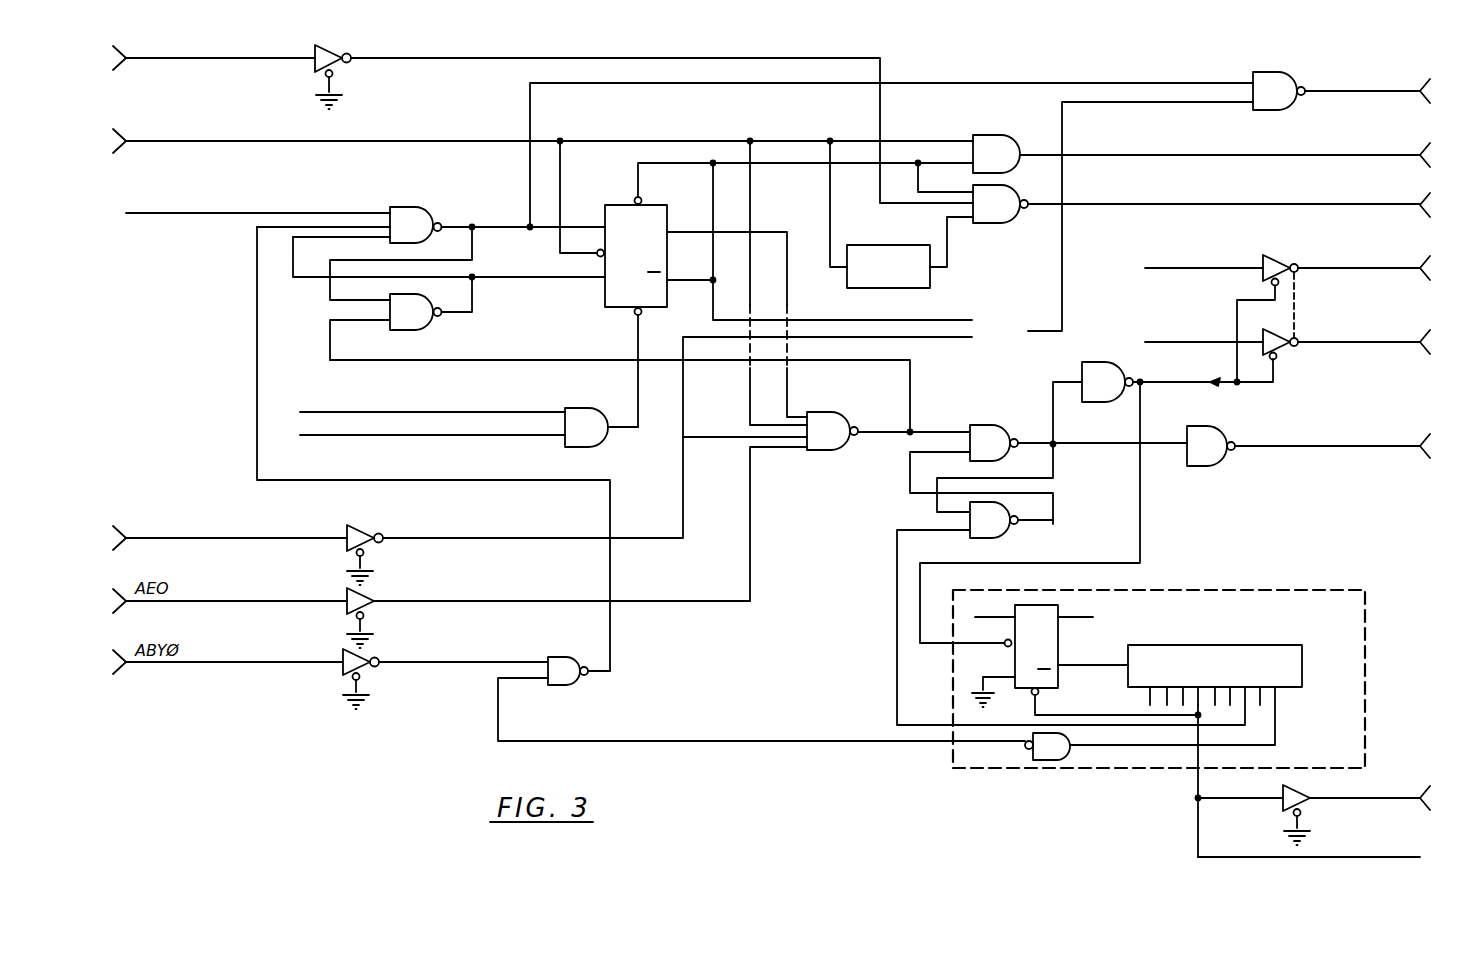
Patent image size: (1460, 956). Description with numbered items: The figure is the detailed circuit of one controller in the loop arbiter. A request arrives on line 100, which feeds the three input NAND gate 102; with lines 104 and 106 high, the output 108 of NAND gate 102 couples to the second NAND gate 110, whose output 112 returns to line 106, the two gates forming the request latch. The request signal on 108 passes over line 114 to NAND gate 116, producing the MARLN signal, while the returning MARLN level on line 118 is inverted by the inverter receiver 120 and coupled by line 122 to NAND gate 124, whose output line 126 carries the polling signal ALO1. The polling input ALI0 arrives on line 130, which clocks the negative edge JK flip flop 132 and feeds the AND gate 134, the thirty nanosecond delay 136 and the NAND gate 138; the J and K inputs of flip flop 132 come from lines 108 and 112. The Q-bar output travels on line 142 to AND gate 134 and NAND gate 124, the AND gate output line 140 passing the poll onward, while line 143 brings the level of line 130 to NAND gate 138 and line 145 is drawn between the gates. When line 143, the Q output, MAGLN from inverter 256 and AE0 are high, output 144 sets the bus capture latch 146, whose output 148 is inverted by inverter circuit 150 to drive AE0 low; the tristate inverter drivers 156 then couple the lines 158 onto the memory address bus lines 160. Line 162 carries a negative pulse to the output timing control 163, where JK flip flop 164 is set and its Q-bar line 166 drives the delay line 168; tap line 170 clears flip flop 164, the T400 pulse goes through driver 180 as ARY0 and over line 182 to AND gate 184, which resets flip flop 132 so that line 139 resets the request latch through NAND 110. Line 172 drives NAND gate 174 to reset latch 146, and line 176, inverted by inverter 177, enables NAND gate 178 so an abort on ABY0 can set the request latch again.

The request line 100 is at (288, 213).
The three input NAND gate 102 is at (416, 216).
The line 104 is at (257, 344).
The line 106 is at (312, 282).
The output line 108 is at (460, 227).
The second NAND gate 110 is at (428, 326).
The output line 112 is at (474, 300).
The line 114 is at (990, 83).
The NAND gate 116 is at (1272, 110).
The line 118 is at (258, 70).
The inverter receiver 120 is at (340, 54).
The line 122 is at (700, 58).
The NAND gate 124 is at (1008, 190).
The output line 126 is at (1136, 204).
The line 130 is at (380, 141).
The negative edge JK flip flop 132 is at (667, 208).
The AND gate 134 is at (996, 135).
The 30 nanosecond delay 136 is at (892, 245).
The NAND gate 138 is at (836, 412).
The line 139 is at (554, 360).
The output line 140 is at (1138, 155).
The line 142 is at (714, 212).
The line 143 is at (764, 218).
The output 144 is at (874, 440).
The line from NAND gate 143 to gate 116 145 is at (1062, 256).
The bus capture latch 146 is at (948, 428).
The output 148 is at (1074, 436).
The inverter circuit 150 is at (1210, 466).
The tristate inverter drivers 156 is at (1316, 315).
The lines 158 is at (1181, 331).
The memory address bus lines 160 is at (1416, 330).
The line 162 is at (1140, 492).
The output timing control 163 is at (1276, 590).
The JK flip flop 164 is at (1058, 605).
The line 166 is at (1108, 660).
The delay line 168 is at (1182, 645).
The line 170 is at (1200, 708).
The line 172 is at (1136, 725).
The NAND gate 174 is at (1010, 536).
The line 176 is at (1144, 745).
The inverter 177 is at (1058, 760).
The NAND gate 178 is at (560, 656).
The driver 180 is at (1280, 792).
The line 182 is at (1234, 857).
The AND gate 184 is at (580, 408).
The inverter (MAGLN input) 256 is at (370, 530).